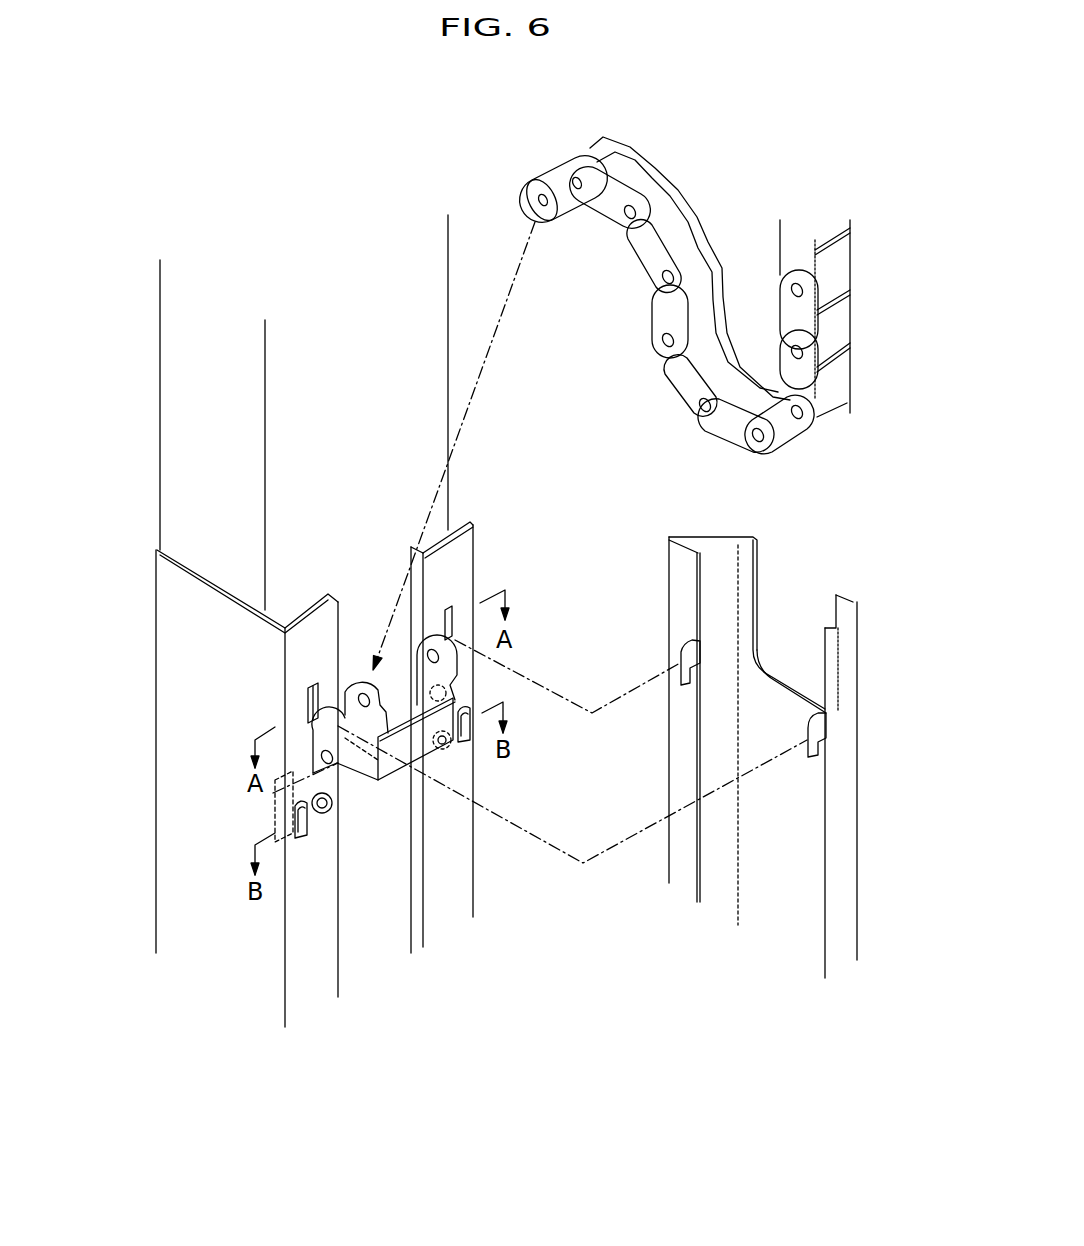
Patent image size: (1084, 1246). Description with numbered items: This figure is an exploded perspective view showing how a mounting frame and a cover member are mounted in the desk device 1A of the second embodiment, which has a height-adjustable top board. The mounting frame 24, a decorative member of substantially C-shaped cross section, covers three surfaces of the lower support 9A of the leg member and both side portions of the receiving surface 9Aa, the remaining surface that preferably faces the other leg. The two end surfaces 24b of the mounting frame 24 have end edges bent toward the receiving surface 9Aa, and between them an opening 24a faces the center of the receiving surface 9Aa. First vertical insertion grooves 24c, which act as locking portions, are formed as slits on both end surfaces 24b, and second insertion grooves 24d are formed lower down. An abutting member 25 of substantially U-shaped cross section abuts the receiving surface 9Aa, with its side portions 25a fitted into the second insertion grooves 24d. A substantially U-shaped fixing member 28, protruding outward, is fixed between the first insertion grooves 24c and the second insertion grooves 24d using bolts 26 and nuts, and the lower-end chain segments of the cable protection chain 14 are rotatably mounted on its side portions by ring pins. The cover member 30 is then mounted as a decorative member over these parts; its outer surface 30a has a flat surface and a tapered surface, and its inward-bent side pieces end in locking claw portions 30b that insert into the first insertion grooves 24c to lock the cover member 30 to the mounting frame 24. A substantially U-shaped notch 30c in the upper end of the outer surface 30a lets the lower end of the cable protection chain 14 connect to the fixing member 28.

The cable protection chain 14 is at (640, 155).
The lower support 9A is at (158, 378).
The receiving surface 9Aa is at (440, 277).
The mounting frame 24 is at (157, 578).
The opening 24a is at (390, 525).
The end surfaces 24b is at (462, 543).
The first vertical insertion grooves 24c is at (452, 615).
The second insertion grooves 24d is at (463, 743).
The abutting member 25 is at (312, 832).
The side portions 25a is at (463, 710).
The bolts 26 is at (307, 778).
The fixing member 28 is at (435, 747).
The cover member 30 is at (757, 540).
The outer surface 30a is at (847, 600).
The locking claw portion 30b is at (687, 645).
The notch 30c is at (757, 575).
The desk device 1A is at (835, 500).